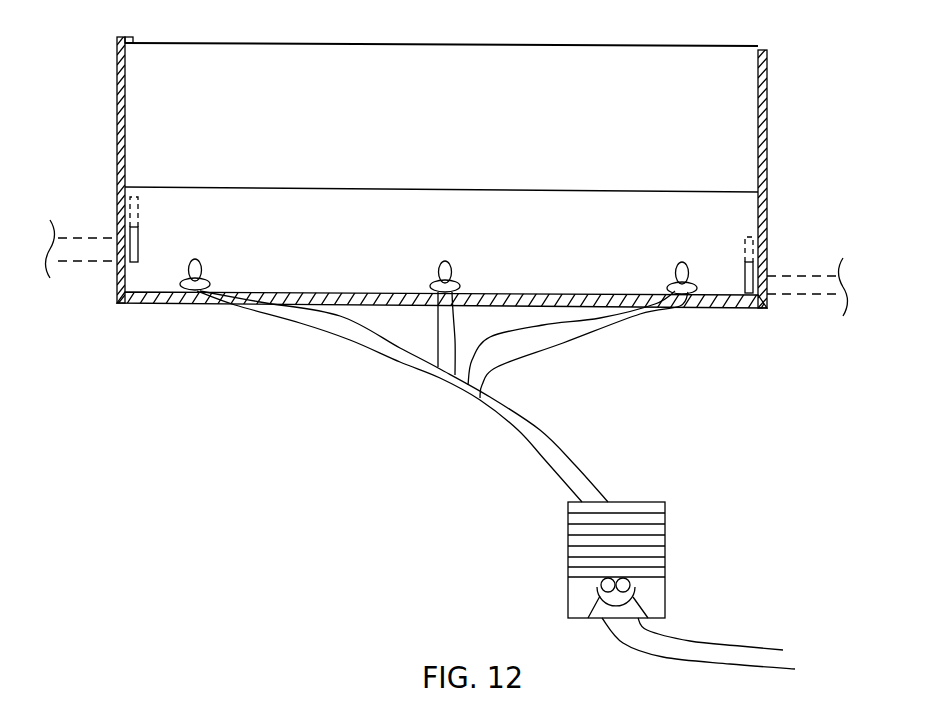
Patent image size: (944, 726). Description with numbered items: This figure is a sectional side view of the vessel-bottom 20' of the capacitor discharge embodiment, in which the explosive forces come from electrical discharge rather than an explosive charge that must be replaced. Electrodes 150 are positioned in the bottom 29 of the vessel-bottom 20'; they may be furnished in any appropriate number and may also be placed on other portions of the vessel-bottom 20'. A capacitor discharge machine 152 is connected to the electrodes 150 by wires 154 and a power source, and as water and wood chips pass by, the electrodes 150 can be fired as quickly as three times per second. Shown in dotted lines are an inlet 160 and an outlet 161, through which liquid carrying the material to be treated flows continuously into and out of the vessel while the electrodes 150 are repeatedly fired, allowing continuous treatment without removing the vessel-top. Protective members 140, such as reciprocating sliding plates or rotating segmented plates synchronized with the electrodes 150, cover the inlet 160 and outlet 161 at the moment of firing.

The vessel-bottom 20' is at (472, 176).
The bottom 29 is at (718, 296).
The protective members 140 is at (140, 252).
The electrodes 150 is at (675, 270).
The capacitor discharge machine 152 is at (625, 500).
The wires 154 is at (493, 400).
The inlet 160 is at (95, 233).
The outlet 161 is at (802, 272).